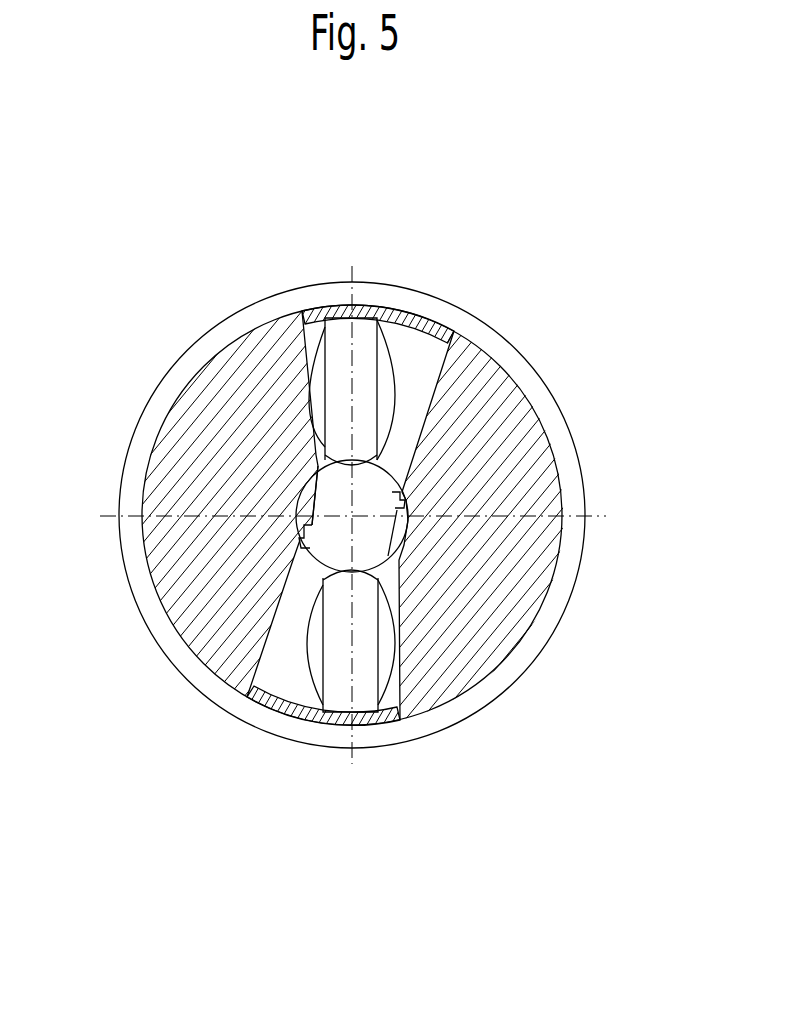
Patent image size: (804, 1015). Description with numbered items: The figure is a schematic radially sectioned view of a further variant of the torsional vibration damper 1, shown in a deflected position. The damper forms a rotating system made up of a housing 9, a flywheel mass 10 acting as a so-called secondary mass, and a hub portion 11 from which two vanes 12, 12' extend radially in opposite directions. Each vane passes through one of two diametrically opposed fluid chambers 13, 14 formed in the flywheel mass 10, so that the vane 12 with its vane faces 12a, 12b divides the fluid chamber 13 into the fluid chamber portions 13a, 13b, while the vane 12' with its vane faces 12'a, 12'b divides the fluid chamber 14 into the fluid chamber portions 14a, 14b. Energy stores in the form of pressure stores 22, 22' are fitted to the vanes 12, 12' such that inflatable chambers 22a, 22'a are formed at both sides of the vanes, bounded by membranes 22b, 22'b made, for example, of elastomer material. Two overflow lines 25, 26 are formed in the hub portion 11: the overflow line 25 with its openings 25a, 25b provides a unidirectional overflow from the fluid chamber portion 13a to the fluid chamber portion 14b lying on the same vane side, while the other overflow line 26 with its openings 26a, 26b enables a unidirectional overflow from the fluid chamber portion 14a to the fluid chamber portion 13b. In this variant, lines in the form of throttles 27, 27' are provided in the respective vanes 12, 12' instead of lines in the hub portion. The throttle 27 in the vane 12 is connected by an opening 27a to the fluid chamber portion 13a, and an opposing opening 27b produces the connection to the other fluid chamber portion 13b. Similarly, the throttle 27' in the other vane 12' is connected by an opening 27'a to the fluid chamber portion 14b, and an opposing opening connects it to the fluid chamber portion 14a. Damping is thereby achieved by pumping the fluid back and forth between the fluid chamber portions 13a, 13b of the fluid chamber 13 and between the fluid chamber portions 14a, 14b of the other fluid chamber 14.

The torsional vibration damper 1 is at (421, 210).
The housing 9 is at (485, 342).
The flywheel mass 10 is at (492, 383).
The hub portion 11 is at (386, 590).
The vane 12 is at (357, 326).
The vane face 12a is at (380, 327).
The vane face 12b is at (324, 326).
The vane 12' is at (328, 761).
The vane face 12'a is at (289, 780).
The vane face 12'b is at (406, 777).
The fluid chamber 13 is at (388, 313).
The fluid chamber portion 13a is at (436, 359).
The fluid chamber portion 13b is at (310, 335).
The fluid chamber 14 is at (308, 642).
The fluid chamber portion 14a is at (265, 667).
The fluid chamber portion 14b is at (387, 697).
The pressure store 22 is at (416, 326).
The chamber 22a is at (308, 352).
The membrane 22b is at (311, 452).
The pressure store 22' is at (448, 717).
The chamber 22'a is at (393, 746).
The membrane 22'b is at (339, 730).
The overflow line 25 is at (368, 545).
The opening 25a is at (400, 493).
The opening 25b is at (378, 575).
The overflow line 26 is at (317, 493).
The opening 26a is at (320, 465).
The opening 26b is at (305, 542).
The throttle 27 is at (235, 345).
The opening 27a is at (378, 460).
The opening 27b is at (321, 462).
The throttle 27' is at (471, 705).
The opening 27'a is at (510, 729).